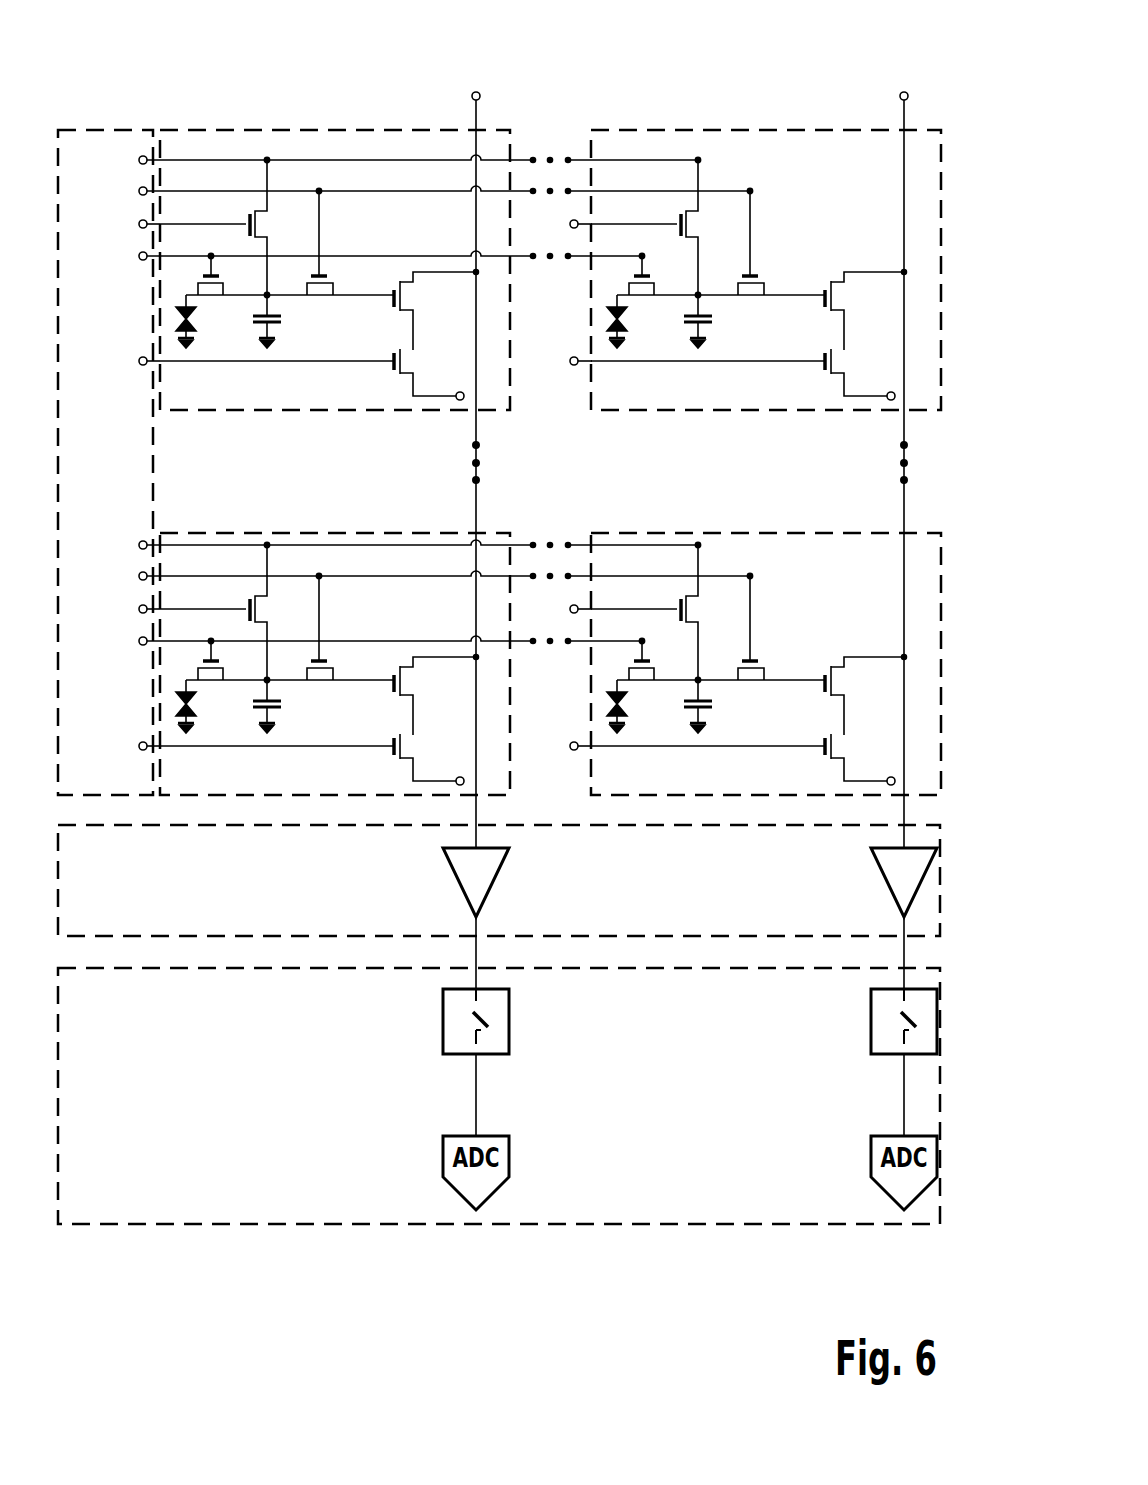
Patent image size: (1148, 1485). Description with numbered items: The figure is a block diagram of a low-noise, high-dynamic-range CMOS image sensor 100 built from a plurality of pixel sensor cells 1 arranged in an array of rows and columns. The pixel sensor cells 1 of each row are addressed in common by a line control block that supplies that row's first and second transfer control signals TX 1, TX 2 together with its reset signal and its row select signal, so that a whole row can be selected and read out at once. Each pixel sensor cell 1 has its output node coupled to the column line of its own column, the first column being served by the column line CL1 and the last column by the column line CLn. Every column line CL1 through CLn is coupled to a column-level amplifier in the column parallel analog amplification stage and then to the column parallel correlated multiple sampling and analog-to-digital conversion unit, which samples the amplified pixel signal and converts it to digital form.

The CMOS image sensor 100 is at (276, 106).
The pixel sensor cell 1 is at (412, 254).
The second control signal 2 is at (412, 639).
The column line CL1 is at (476, 116).
The column line CLn is at (904, 114).